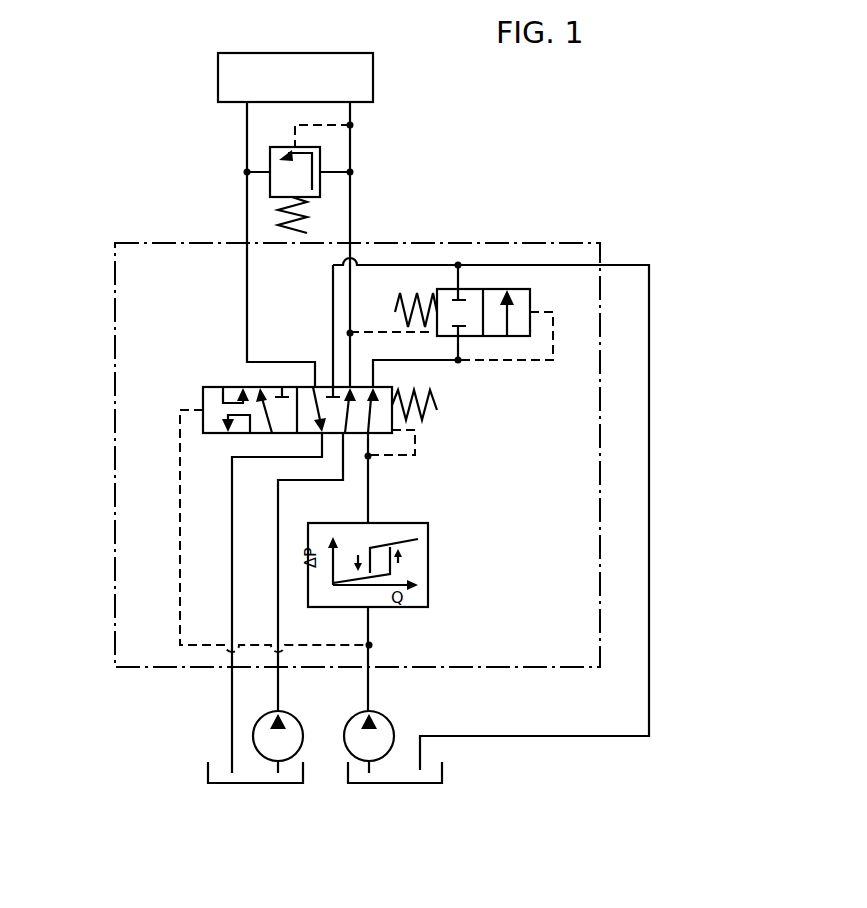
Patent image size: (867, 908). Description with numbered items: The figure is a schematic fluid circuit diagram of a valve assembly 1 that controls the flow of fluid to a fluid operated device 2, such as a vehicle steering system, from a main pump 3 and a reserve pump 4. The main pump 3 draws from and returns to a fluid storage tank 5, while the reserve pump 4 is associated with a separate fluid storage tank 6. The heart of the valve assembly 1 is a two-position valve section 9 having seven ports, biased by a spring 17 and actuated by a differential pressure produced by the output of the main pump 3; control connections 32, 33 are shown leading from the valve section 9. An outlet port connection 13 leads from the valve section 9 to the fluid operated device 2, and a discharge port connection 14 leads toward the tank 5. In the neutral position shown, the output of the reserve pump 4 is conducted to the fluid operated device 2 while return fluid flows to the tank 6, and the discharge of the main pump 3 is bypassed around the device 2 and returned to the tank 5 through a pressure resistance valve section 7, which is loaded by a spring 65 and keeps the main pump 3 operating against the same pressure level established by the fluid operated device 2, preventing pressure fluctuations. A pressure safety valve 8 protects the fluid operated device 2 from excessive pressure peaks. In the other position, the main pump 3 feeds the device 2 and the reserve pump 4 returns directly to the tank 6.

The valve assembly 1 is at (95, 412).
The fluid operated device 2 is at (230, 69).
The main pump 3 is at (379, 743).
The reserve pump 4 is at (273, 745).
The fluid storage tank 5 is at (432, 768).
The fluid storage tank 6 is at (220, 773).
The pressure resistance valve section 7 is at (660, 310).
The pressure safety valve 8 is at (290, 167).
The two-position valve section 9 is at (221, 376).
The outlet port connection 13 is at (350, 223).
The discharge port connection 14 is at (440, 361).
The spring 17 is at (437, 403).
The bore 32 is at (178, 420).
The bore 33 is at (427, 457).
The spring 65 is at (398, 311).